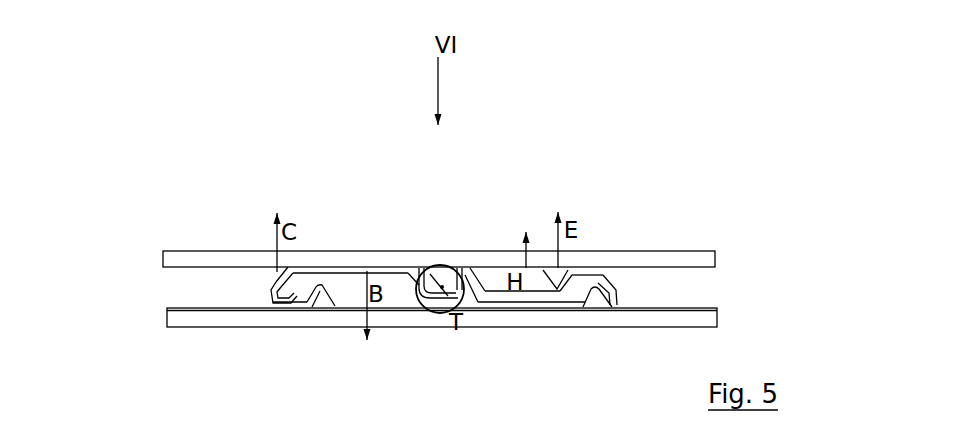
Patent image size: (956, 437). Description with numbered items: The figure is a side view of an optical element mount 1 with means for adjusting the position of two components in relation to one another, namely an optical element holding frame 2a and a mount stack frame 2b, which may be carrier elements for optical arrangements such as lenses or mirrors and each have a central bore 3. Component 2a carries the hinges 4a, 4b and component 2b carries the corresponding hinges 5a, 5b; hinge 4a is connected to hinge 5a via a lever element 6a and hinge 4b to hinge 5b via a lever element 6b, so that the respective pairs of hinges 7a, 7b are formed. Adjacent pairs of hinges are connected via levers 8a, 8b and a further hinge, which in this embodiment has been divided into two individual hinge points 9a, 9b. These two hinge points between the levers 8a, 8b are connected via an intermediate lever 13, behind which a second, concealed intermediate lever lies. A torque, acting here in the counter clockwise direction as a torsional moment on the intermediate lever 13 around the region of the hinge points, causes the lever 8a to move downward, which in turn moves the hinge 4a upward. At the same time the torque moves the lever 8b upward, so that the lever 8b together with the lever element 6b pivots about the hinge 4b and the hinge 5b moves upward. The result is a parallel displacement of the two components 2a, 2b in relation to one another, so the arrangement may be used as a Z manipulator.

The optical element mount 1 is at (140, 195).
The optical element holding frame 2a is at (172, 258).
The mount stack frame 2b is at (178, 318).
The central bore 3 is at (319, 257).
The hinge 4a is at (278, 290).
The hinge 4b is at (604, 285).
The hinge 5a is at (320, 300).
The hinge 5b is at (557, 288).
The lever element 6a is at (297, 296).
The lever element 6b is at (588, 282).
The pair of hinges 7a is at (258, 294).
The pair of hinges 7b is at (624, 296).
The lever 8a is at (384, 285).
The lever 8b is at (492, 290).
The hinge point 9a is at (424, 276).
The hinge point 9b is at (462, 262).
The intermediate lever 13 is at (441, 287).